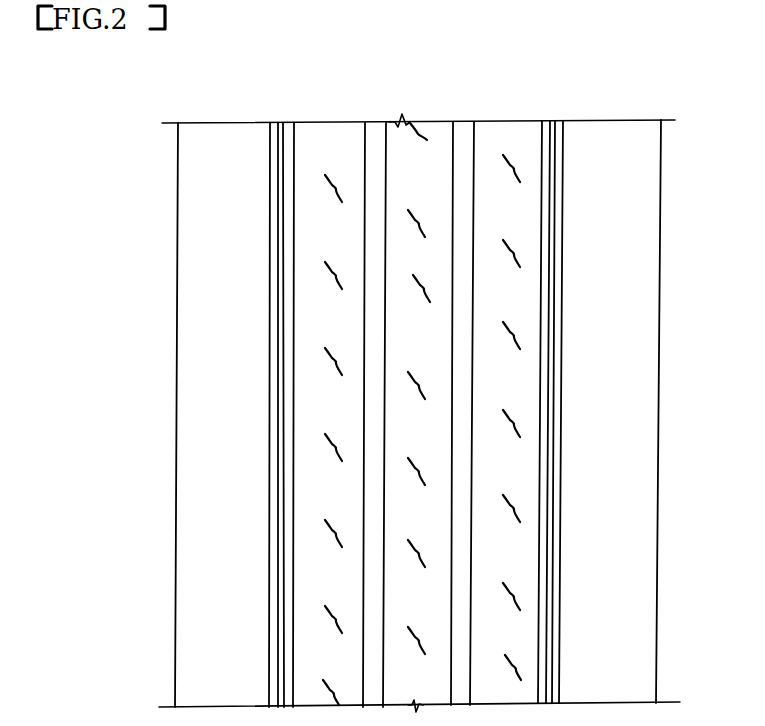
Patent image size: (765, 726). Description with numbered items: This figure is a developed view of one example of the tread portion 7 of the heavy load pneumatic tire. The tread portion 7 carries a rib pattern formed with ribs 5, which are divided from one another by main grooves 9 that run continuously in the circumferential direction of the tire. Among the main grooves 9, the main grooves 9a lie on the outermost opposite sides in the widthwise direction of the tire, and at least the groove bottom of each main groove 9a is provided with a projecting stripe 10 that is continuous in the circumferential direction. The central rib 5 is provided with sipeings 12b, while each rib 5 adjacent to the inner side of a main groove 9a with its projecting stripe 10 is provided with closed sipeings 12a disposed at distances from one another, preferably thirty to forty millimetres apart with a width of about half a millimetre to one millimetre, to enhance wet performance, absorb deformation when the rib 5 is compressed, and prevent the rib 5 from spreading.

The rib 5 is at (397, 130).
The tread portion 7 is at (675, 103).
The main groove 9 is at (463, 128).
The outermost main groove 9a is at (297, 153).
The projecting stripe 10 is at (280, 122).
The closed sipeing 12a is at (327, 270).
The sipeing 12b is at (424, 302).